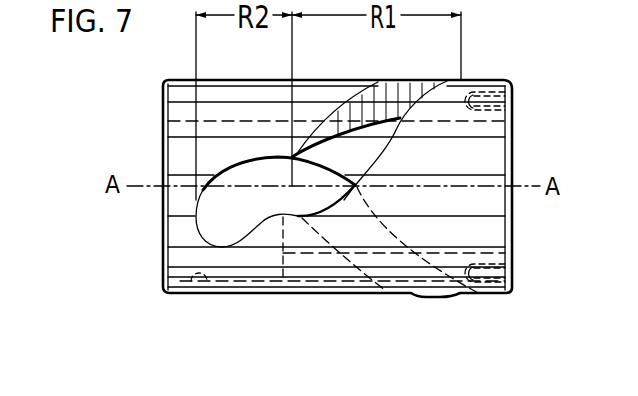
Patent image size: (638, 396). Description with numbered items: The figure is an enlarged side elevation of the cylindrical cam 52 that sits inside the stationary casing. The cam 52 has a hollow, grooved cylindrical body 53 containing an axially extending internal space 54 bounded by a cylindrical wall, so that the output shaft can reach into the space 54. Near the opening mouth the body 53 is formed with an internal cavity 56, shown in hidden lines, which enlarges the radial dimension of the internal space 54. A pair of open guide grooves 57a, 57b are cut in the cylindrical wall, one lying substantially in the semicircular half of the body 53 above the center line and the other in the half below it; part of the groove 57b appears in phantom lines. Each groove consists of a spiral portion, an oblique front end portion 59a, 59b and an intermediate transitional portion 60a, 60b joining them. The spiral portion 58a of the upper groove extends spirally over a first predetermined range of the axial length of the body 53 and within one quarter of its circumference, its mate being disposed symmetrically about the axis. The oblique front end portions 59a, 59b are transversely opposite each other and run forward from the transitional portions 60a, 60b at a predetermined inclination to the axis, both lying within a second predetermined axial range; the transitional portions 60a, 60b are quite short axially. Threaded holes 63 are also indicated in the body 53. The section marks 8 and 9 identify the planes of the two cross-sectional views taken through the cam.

The cylindrical cam 52 is at (161, 270).
The hollow grooved cylindrical body 53 is at (488, 160).
The internal space 54 is at (181, 150).
The internal cavity 56 is at (191, 296).
The open guide groove 57a is at (391, 277).
The open guide groove 57b is at (288, 206).
The spiral portion 58a is at (403, 93).
The oblique front end portion 59a is at (202, 228).
The oblique front end portion 59b is at (211, 219).
The transitional portion 60a is at (229, 121).
The transitional portion 60b is at (282, 172).
The threaded holes 63 is at (513, 100).
The section line 8- 8 is at (240, 191).
The section line 9- 9 is at (371, 193).